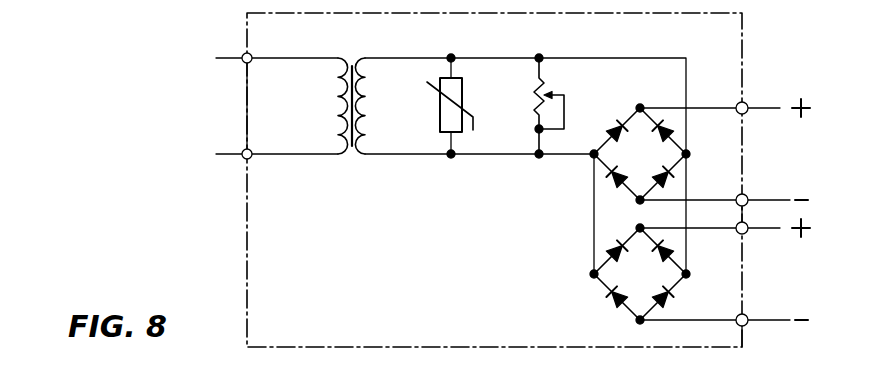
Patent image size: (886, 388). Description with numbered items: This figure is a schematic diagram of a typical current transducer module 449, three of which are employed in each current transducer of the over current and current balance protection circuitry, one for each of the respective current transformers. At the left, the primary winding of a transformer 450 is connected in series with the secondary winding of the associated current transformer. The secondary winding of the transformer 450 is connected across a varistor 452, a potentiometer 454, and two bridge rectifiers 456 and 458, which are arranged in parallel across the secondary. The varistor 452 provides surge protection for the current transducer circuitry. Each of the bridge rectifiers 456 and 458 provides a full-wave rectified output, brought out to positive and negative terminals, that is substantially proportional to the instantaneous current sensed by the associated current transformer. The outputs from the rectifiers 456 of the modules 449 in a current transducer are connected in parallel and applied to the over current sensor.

The current transducer module 449 is at (440, 252).
The transformer 450 is at (352, 150).
The varistor 452 is at (448, 133).
The potentiometer 454 is at (541, 104).
The bridge rectifier 456 is at (637, 104).
The bridge rectifier 458 is at (603, 283).